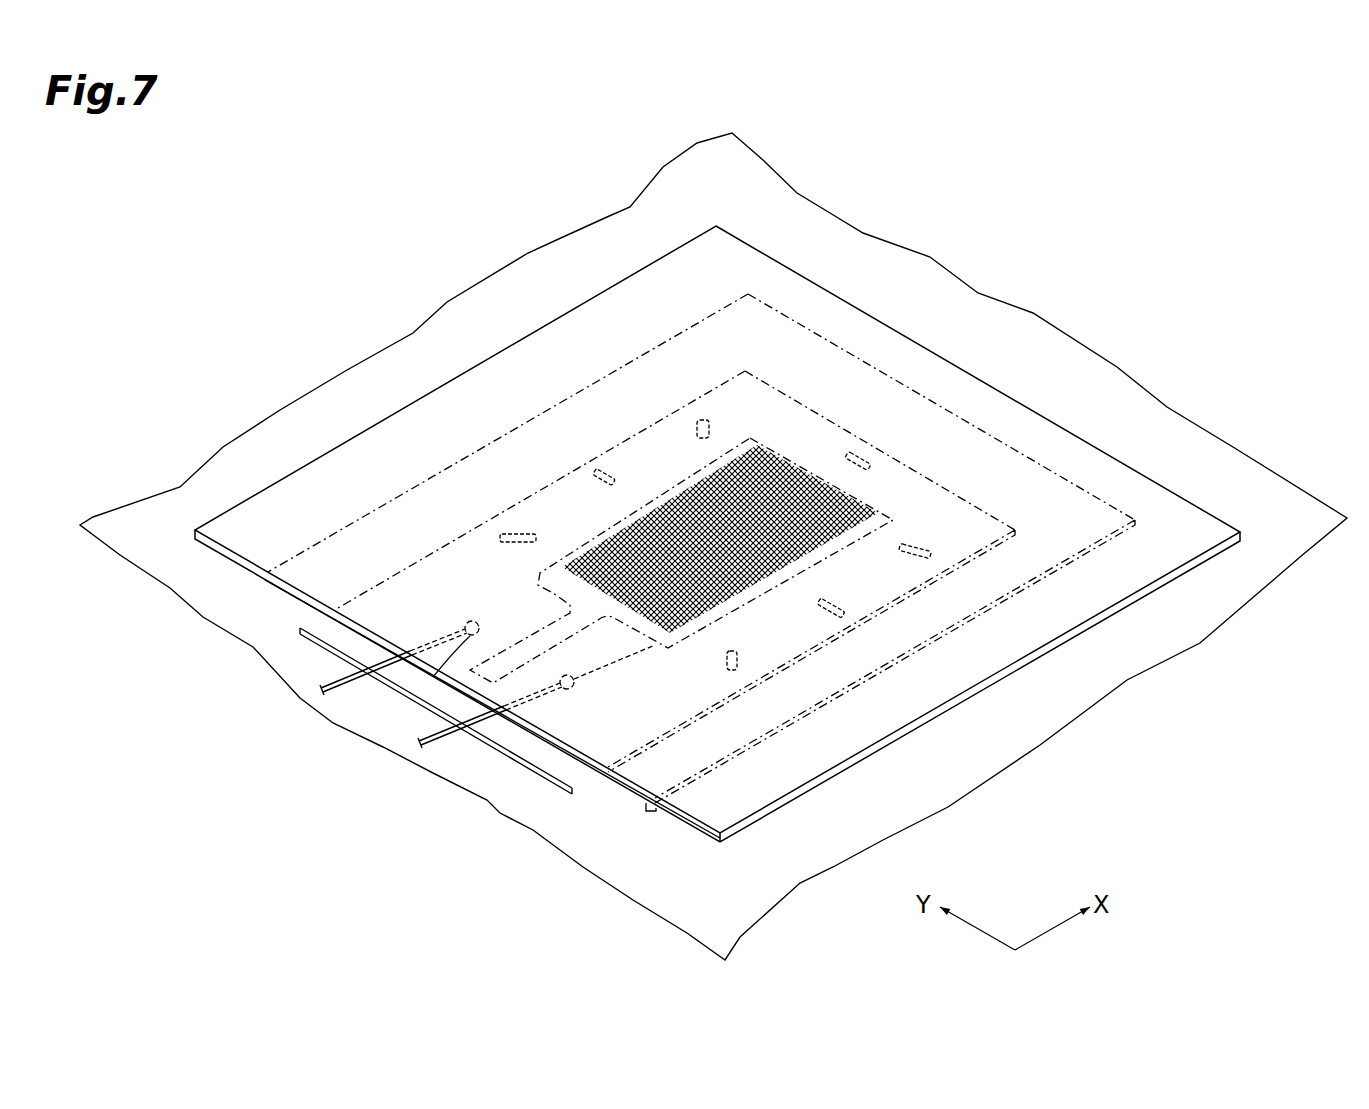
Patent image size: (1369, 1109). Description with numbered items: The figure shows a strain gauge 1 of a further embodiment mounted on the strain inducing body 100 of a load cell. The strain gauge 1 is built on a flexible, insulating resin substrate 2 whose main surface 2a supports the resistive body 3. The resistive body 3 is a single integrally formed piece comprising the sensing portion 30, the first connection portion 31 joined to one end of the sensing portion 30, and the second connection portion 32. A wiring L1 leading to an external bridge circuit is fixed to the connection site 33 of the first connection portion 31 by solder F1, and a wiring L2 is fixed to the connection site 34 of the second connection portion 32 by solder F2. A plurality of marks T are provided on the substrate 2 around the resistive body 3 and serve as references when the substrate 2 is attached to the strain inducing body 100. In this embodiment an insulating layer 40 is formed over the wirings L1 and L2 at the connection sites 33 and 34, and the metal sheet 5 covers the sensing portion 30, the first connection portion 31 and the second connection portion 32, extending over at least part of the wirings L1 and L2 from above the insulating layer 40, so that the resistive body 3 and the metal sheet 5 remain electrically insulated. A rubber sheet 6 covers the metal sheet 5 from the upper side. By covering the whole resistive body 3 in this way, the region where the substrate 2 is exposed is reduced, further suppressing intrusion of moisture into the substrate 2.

The strain gauge 1 is at (770, 240).
The strain inducing body 100 is at (422, 358).
The rubber sheet 6 is at (1190, 522).
The sensing portion 30 is at (677, 599).
The first connection portion 31 is at (410, 614).
The second connection portion 32 is at (575, 705).
The connection site 33 is at (450, 608).
The connection site 34 is at (640, 725).
The insulating layer 40 is at (645, 642).
The resistive body 3 is at (767, 437).
The metal sheet 5 is at (650, 813).
The substrate 2 is at (374, 774).
The main surface 2a is at (305, 627).
The wiring L1 is at (340, 682).
The wiring L2 is at (447, 733).
The solder F1 is at (455, 655).
The solder F2 is at (565, 692).
The mark T is at (433, 677).